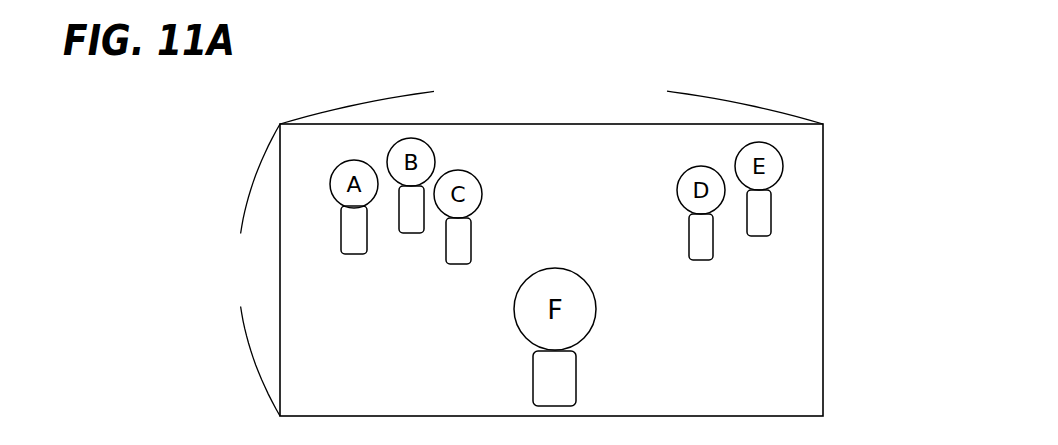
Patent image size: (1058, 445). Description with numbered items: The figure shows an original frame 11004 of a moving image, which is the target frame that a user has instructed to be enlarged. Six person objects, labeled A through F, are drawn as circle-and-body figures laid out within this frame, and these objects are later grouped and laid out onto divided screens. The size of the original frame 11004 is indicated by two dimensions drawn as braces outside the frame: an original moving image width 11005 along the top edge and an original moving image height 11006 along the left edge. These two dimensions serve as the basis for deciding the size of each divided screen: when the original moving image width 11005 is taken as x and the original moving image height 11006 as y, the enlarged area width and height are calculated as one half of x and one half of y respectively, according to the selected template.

The original frame 11004 is at (808, 343).
The original moving image width 11005 is at (613, 30).
The original moving image height 11006 is at (193, 235).